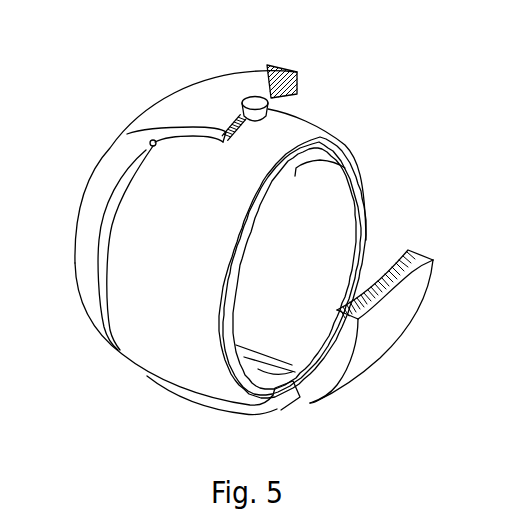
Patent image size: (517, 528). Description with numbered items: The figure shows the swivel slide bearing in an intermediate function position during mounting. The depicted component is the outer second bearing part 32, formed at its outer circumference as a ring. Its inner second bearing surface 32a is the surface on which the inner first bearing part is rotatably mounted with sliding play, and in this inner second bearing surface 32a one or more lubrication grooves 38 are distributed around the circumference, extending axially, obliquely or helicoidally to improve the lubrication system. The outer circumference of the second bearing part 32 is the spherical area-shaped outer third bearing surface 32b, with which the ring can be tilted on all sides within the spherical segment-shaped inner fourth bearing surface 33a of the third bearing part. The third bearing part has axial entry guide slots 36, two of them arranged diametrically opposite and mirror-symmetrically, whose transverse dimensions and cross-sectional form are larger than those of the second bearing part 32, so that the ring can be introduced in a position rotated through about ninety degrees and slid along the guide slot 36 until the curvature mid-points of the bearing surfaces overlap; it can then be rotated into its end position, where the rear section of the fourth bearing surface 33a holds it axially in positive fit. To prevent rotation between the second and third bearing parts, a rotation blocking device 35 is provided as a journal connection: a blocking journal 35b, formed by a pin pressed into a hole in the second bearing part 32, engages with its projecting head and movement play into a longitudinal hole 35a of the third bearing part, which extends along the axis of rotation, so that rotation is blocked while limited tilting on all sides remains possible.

The outer second bearing part 32 is at (157, 353).
The inner second bearing surface 32a is at (337, 220).
The outer third bearing surface 32b is at (123, 297).
The inner fourth bearing surface 33a is at (107, 218).
The rotation blocking device 35 is at (248, 86).
The longitudinal hole 35a is at (270, 97).
The blocking journal 35b is at (268, 108).
The axial entry guide slot 36 is at (136, 143).
The lubrication groove 38 is at (336, 164).